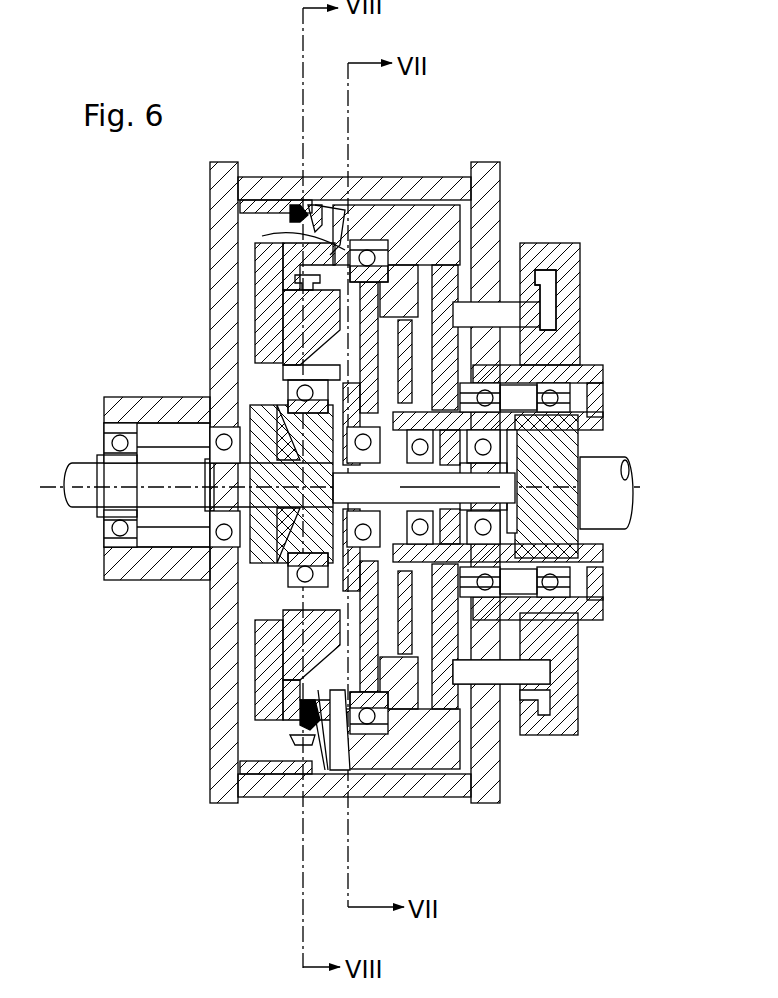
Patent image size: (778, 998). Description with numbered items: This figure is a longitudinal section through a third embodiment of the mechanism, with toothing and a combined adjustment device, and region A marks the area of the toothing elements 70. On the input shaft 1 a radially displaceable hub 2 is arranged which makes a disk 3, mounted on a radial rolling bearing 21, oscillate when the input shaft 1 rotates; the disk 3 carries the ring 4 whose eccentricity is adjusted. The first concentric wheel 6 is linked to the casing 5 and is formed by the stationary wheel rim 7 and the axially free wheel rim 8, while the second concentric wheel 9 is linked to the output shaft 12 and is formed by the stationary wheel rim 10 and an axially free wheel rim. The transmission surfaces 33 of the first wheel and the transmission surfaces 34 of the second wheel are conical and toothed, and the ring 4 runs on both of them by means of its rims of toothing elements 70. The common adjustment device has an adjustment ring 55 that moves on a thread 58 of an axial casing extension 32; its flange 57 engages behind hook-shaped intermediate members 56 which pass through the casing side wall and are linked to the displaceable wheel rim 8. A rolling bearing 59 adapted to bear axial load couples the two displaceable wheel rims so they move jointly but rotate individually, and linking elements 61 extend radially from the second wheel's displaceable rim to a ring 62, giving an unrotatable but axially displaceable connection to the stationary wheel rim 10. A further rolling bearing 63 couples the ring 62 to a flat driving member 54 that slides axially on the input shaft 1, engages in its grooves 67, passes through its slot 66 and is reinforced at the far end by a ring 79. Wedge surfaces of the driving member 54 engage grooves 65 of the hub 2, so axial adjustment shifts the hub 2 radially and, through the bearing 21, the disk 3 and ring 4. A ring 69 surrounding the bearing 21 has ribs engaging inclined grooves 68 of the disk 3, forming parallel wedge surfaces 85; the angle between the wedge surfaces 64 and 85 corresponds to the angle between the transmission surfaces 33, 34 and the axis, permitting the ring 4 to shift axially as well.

The input shaft 1 is at (85, 498).
The hub 2 is at (245, 417).
The disk 3 is at (265, 305).
The ring 4 is at (270, 255).
The casing 5 is at (330, 782).
The first concentric wheel 6 is at (305, 790).
The stationary wheel rim 7 is at (296, 205).
The axially free wheel rim 8 is at (318, 200).
The second concentric wheel 9 is at (300, 672).
The stationary wheel rim 10 is at (300, 290).
The output shaft 12 is at (615, 510).
The radial rolling bearing 21 is at (275, 392).
The axial casing extension 32 is at (590, 374).
The transmission surfaces 33 is at (335, 700).
The transmission surfaces 34 is at (320, 690).
The flat driving member 54 is at (100, 450).
The adjustment ring 55 is at (567, 707).
The hook-shaped intermediate members 56 is at (530, 672).
The flange 57 is at (530, 698).
The thread 58 is at (520, 350).
The rolling bearing 59 is at (370, 245).
The linking elements 61 is at (467, 250).
The ring 62 is at (507, 323).
The rolling bearing 63 is at (540, 542).
The wedge surfaces 64 is at (125, 432).
The grooves 65 is at (205, 583).
The slot 66 is at (617, 470).
The grooves 67 is at (545, 470).
The grooves 68 is at (290, 590).
The ring 69 is at (295, 375).
The toothing elements 70 is at (300, 205).
The ring 79 is at (205, 573).
The wedge surfaces 85 is at (300, 345).
The region A is at (265, 232).